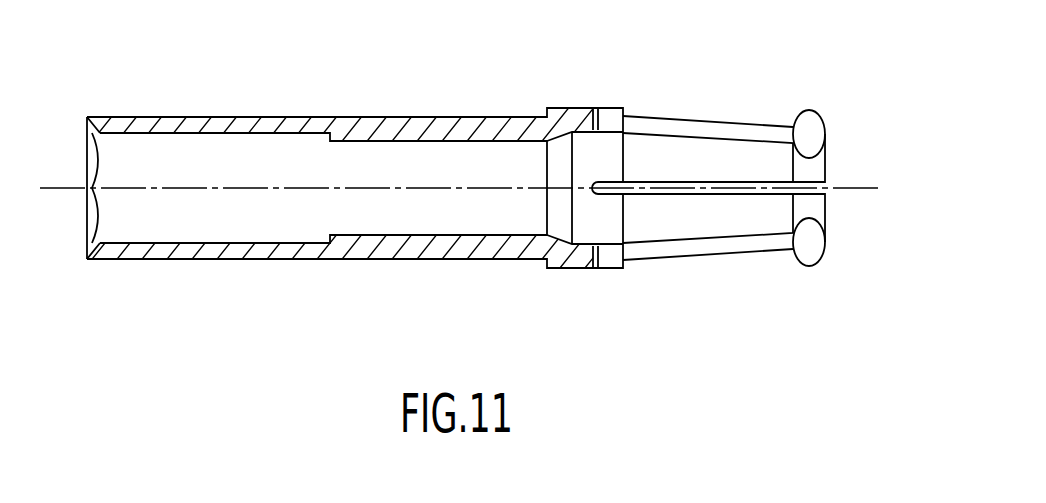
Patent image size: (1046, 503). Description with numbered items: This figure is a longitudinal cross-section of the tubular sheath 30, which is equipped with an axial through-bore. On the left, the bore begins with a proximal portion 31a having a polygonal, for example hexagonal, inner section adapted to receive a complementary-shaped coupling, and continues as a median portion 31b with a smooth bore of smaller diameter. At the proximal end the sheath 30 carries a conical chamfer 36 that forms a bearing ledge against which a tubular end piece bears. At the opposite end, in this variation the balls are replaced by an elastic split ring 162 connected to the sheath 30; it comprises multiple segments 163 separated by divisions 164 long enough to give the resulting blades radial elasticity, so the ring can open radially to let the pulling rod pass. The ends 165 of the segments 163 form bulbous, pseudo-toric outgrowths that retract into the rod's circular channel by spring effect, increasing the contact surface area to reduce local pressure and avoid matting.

The tubular sheath 30 is at (249, 110).
The proximal portion 31a is at (224, 244).
The median portion 31b is at (424, 243).
The conical chamfer 36 is at (90, 248).
The elastic split ring 162 is at (678, 110).
The segments 163 is at (693, 245).
The divisions 164 is at (727, 185).
The ends 165 is at (815, 258).